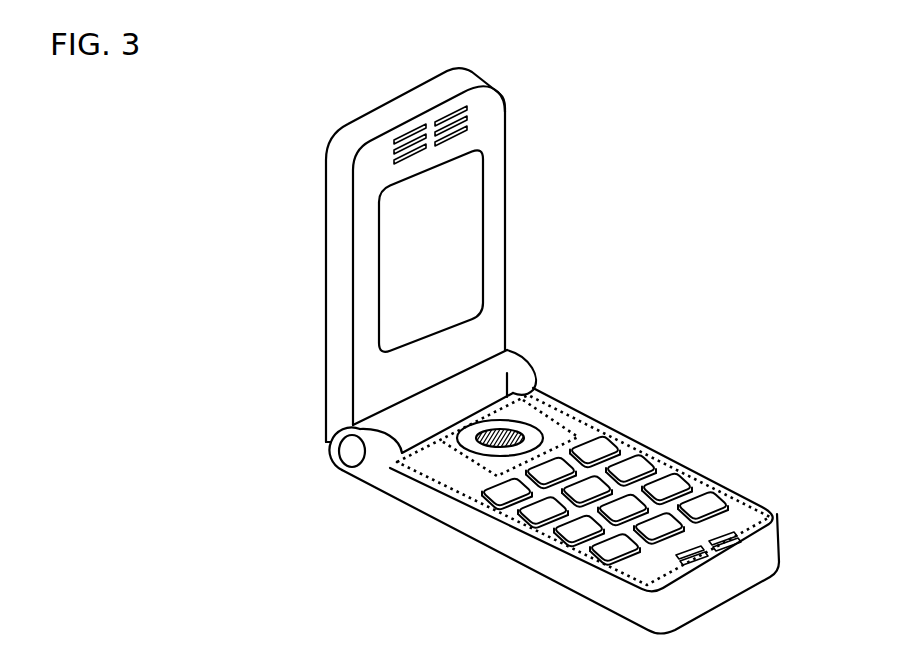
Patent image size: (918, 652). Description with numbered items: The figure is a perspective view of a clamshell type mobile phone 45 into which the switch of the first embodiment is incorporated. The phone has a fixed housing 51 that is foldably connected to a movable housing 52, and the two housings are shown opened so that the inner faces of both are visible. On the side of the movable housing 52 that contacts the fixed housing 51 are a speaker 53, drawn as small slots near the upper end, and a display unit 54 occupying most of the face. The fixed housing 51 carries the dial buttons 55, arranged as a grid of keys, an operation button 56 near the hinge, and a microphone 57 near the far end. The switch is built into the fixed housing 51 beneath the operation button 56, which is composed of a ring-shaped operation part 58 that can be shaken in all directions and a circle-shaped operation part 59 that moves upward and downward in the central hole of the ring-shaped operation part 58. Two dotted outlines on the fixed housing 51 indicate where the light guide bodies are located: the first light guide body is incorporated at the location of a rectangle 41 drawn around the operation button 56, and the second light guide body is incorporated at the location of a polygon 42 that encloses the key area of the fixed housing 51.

The mobile phone 45 is at (622, 145).
The fixed housing 51 is at (630, 433).
The movable housing 52 is at (335, 245).
The speaker 53 is at (463, 116).
The display unit 54 is at (470, 232).
The rectangle 41 is at (513, 408).
The polygon 42 is at (572, 402).
The dial buttons 55 is at (540, 513).
The operation button 56 is at (392, 557).
The microphone 57 is at (735, 533).
The ring-shaped operation part 58 is at (478, 455).
The circle-shaped operation part 59 is at (490, 443).